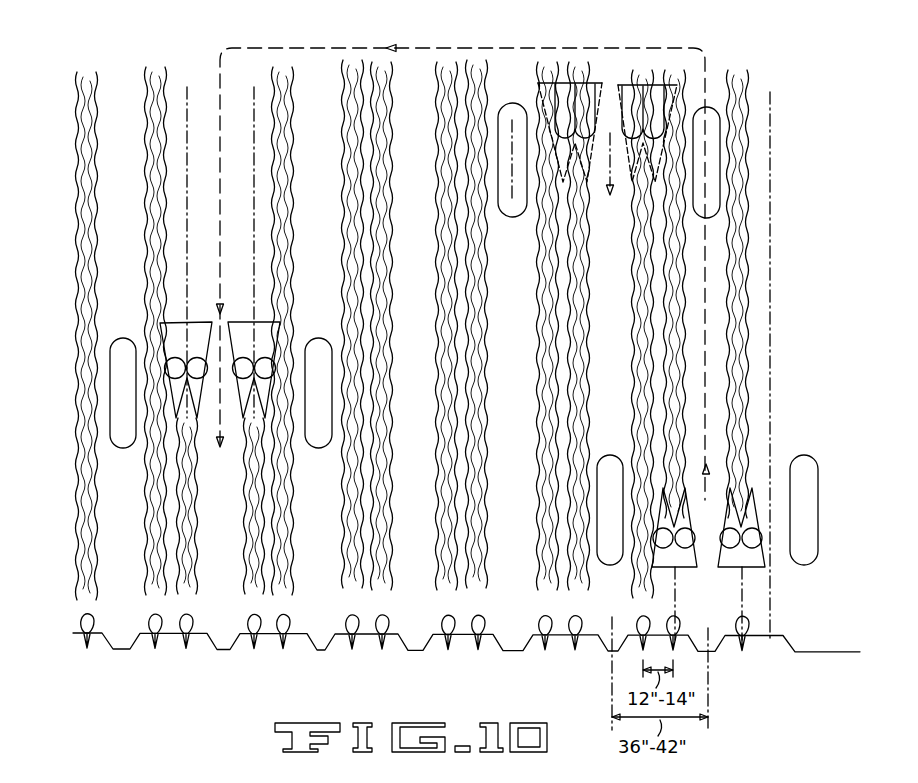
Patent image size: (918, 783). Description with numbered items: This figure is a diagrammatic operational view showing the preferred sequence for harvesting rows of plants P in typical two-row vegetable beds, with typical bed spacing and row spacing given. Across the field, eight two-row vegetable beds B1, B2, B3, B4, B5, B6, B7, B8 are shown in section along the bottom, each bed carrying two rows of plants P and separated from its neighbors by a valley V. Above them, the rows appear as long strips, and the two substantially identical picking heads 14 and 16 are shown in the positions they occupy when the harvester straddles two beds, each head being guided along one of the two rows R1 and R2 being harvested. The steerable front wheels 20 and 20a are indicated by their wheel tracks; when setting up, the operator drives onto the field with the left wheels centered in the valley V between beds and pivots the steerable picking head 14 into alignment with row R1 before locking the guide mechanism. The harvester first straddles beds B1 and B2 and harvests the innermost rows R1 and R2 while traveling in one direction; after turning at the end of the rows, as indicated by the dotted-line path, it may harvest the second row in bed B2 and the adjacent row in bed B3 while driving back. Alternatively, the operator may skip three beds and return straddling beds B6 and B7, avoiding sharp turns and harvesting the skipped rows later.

The picking head 14 is at (668, 86).
The picking head 16 is at (545, 83).
The front wheel 20 is at (123, 448).
The left front wheel 20a is at (318, 448).
The plants P is at (325, 204).
The first row R1 is at (668, 304).
The second row R2 is at (748, 310).
The first two-row vegetable bed B1 is at (770, 633).
The second two-row vegetable bed B2 is at (684, 634).
The third two-row vegetable bed B3 is at (540, 632).
The fourth two-row vegetable bed B4 is at (440, 630).
The fifth two-row vegetable bed B5 is at (345, 632).
The sixth two-row vegetable bed B6 is at (250, 630).
The seventh two-row vegetable bed B7 is at (152, 630).
The eighth two-row vegetable bed B8 is at (80, 630).
The valley V is at (622, 650).